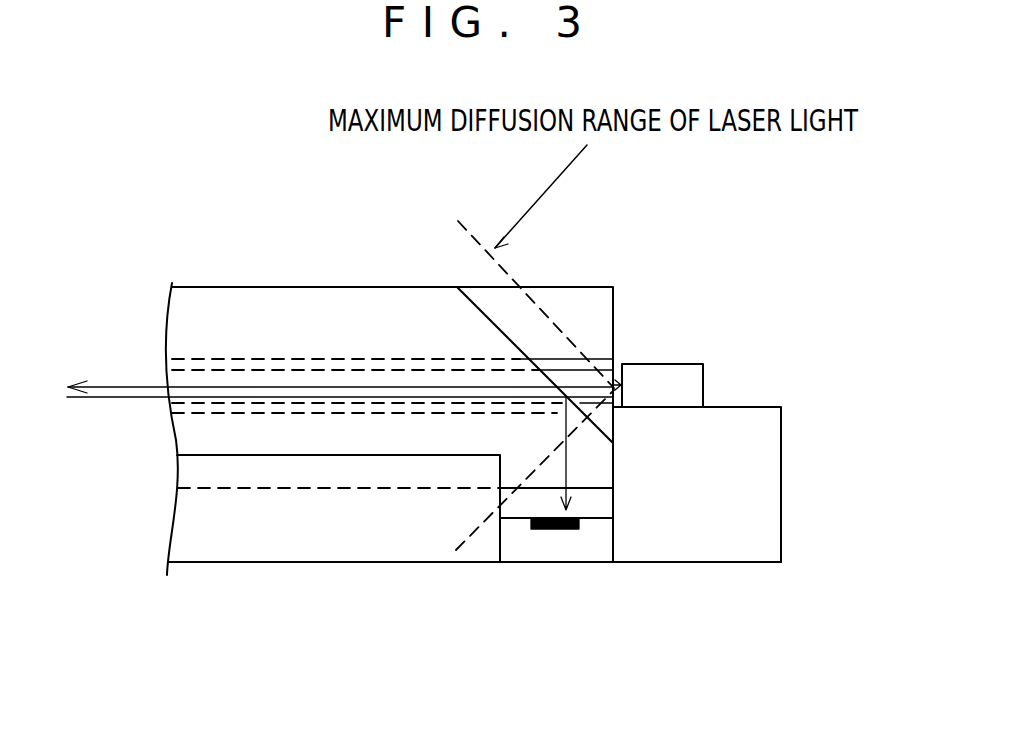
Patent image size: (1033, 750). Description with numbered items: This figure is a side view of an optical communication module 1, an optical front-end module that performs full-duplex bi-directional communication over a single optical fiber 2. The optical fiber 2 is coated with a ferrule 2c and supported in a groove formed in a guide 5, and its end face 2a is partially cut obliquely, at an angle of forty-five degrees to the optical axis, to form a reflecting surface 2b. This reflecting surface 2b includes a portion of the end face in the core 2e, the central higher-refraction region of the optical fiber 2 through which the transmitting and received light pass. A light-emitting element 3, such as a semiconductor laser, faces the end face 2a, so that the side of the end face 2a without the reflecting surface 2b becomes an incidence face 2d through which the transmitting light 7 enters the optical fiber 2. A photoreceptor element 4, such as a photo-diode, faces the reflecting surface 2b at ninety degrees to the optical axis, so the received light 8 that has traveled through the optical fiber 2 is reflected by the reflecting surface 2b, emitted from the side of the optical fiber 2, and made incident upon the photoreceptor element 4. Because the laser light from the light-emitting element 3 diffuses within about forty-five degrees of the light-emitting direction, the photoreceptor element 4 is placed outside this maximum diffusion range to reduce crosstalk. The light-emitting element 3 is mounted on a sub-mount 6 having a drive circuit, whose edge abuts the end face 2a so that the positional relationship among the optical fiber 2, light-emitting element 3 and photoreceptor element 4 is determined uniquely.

The optical communication module 1 is at (722, 579).
The optical fiber 2 is at (253, 367).
The end face 2a is at (613, 318).
The reflecting surface 2b is at (540, 360).
The ferrule 2c is at (308, 305).
The incidence face 2d is at (613, 362).
The core 2e is at (573, 370).
The light-emitting element 3 is at (697, 382).
The photoreceptor element 4 is at (548, 547).
The guide 5 is at (333, 542).
The sub-mount 6 is at (758, 548).
The transmitting light 7 is at (108, 387).
The received light 8 is at (108, 397).